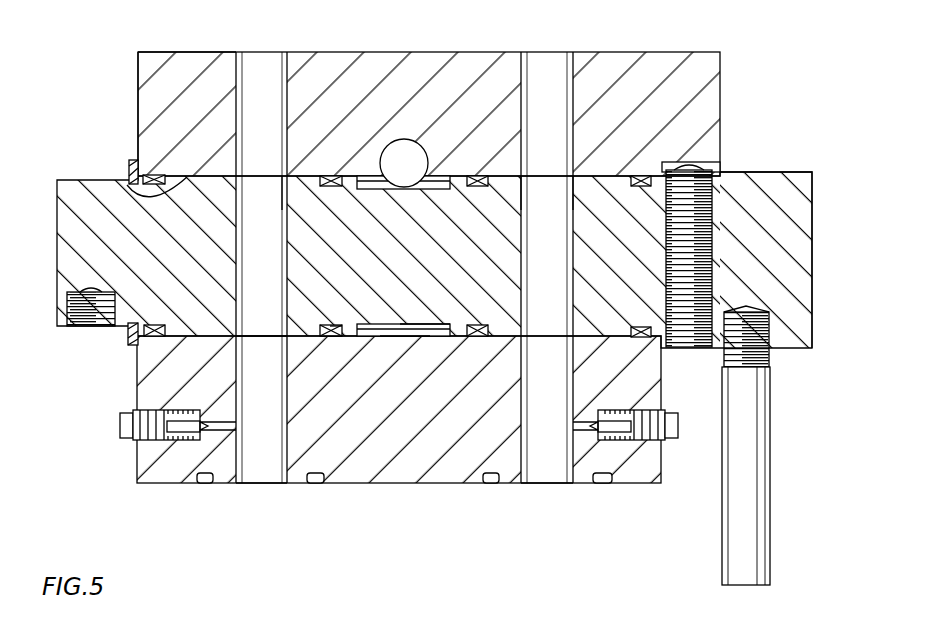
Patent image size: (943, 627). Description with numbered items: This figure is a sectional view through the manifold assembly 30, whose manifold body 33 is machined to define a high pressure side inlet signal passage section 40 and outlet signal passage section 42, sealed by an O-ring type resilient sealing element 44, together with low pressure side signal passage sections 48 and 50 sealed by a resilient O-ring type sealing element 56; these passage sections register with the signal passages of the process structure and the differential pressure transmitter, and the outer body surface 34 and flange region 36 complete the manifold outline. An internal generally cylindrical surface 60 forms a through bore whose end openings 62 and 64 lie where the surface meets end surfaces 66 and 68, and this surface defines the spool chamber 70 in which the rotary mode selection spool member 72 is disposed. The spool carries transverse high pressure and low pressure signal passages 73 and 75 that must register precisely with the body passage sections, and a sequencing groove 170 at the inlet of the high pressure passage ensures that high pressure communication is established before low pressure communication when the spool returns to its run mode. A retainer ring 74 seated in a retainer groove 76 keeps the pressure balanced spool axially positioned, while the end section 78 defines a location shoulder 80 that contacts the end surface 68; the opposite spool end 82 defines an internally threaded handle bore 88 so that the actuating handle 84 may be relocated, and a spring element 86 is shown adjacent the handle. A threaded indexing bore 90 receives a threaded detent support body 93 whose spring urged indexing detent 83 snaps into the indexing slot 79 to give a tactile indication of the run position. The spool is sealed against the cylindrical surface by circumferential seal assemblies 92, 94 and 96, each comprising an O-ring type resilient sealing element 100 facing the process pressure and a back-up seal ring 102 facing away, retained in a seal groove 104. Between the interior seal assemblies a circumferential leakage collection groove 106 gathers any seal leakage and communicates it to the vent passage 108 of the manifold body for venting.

The test assembly 30 is at (106, 40).
The manifold body 33 is at (190, 72).
The upper surface 34 is at (213, 53).
The high pressure side signal passage section 40 is at (267, 62).
The low pressure side signal passage section 48 is at (550, 72).
The mode selection spool member 72 is at (596, 202).
The low pressure spool signal passage 75 is at (552, 203).
The high pressure spool signal passage 73 is at (282, 205).
The end surface 66 is at (138, 75).
The retainer groove 76 is at (133, 172).
The internal generally cylindrical surface 60 is at (125, 183).
The vent passage 108 is at (405, 148).
The spring urged indexing detent 83 is at (693, 160).
The indexing slot 79 is at (712, 167).
The threaded detent support body 93 is at (713, 183).
The location shoulder 80 is at (648, 175).
The end section 78 is at (813, 176).
The spool end 82 is at (77, 232).
The circumferential seal assembly 92 is at (153, 325).
The internally threaded handle bore 88 is at (83, 318).
The retainer ring 74 is at (133, 343).
The end opening 62 is at (155, 360).
The circumferential seal assembly 94 is at (325, 325).
The O-ring type resilient sealing element 100 is at (325, 338).
The back-up seal ring 102 is at (337, 341).
The seal groove 104 is at (343, 325).
The circumferential seal assembly 96 is at (482, 326).
The threaded indexing bore 90 is at (707, 272).
The spring 86 is at (773, 330).
The actuating handle 84 is at (752, 552).
The end opening 64 is at (662, 347).
The end surface 68 is at (661, 460).
The sequencing groove 170 is at (258, 328).
The lower block 36 is at (157, 483).
The O-ring type resilient sealing element 44 is at (205, 485).
The high pressure side signal passage section 42 is at (260, 483).
The spool chamber 70 is at (405, 333).
The circumferential leakage collection groove 106 is at (428, 327).
The resilient O-ring type sealing element 56 is at (492, 485).
The low pressure side signal passage section 50 is at (552, 485).